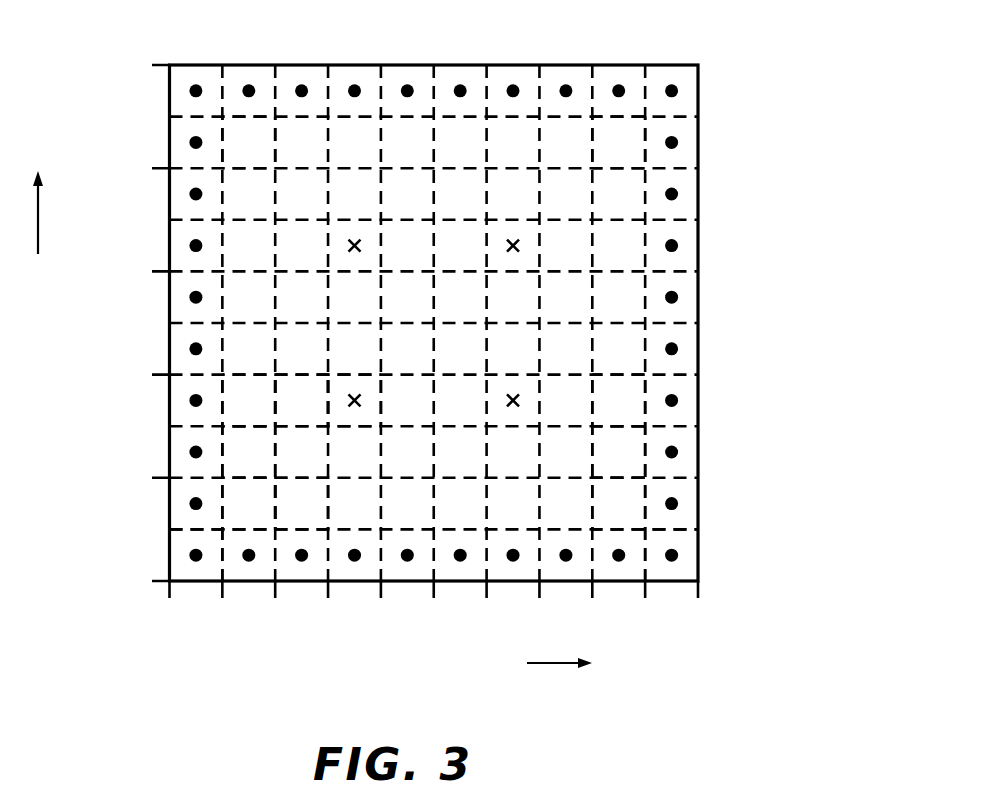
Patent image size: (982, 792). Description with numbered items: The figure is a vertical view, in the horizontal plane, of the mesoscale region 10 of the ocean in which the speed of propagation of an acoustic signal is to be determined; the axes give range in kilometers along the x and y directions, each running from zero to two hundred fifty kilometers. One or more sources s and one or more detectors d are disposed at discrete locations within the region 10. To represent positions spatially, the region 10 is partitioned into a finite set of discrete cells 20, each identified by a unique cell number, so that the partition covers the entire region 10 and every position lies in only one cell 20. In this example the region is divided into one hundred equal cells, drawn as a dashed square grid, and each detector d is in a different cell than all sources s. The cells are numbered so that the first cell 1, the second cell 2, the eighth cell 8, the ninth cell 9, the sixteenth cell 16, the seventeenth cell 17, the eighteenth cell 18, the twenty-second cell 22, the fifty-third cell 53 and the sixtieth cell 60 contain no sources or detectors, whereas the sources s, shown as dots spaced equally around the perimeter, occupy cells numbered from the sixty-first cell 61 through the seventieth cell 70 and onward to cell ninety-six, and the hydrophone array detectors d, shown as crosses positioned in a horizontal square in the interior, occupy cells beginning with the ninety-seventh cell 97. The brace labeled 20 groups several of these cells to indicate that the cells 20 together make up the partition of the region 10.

The mesoscale region 10 is at (788, 294).
The cells 20 is at (775, 372).
The cell C1 1 is at (240, 502).
The cell C2 2 is at (293, 503).
The cell C8 8 is at (617, 500).
The cell C9 9 is at (240, 453).
The cell C16 16 is at (610, 447).
The cell C17 17 is at (247, 402).
The cell C18 18 is at (302, 402).
The cell C22 22 is at (620, 400).
The cell C53 53 is at (242, 138).
The cell C60 60 is at (623, 143).
The cell C61 61 is at (192, 555).
The cell C70 70 is at (678, 556).
The cell C97 97 is at (347, 385).
The source s is at (676, 146).
The detector d is at (354, 228).